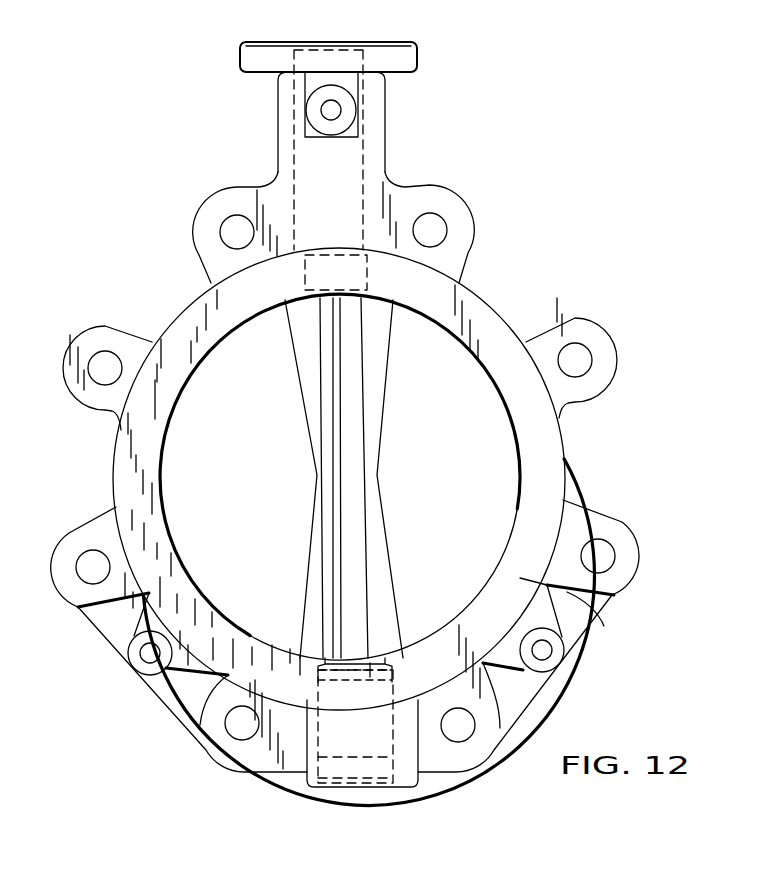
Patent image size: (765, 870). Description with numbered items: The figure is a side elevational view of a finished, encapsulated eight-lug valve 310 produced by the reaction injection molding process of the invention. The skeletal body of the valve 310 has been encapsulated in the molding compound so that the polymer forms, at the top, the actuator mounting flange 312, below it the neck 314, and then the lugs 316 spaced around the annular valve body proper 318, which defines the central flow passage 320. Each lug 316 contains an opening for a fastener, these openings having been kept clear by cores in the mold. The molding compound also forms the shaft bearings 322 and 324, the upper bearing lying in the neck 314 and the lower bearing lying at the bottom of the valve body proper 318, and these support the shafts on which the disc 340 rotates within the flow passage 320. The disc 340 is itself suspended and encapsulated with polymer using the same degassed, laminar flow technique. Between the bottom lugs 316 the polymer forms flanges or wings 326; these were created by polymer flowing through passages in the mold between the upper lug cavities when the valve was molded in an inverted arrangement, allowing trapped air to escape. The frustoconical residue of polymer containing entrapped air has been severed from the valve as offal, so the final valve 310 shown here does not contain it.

The valve 310 is at (487, 176).
The actuator mounting flange 312 is at (259, 44).
The neck 314 is at (386, 154).
The lugs 316 is at (572, 323).
The valve body proper 318 is at (548, 588).
The flow passage 320 is at (444, 628).
The shaft bearing 322 is at (297, 170).
The shaft bearing 324 is at (318, 750).
The flanges or wings 326 is at (183, 700).
The disc 340 is at (352, 452).